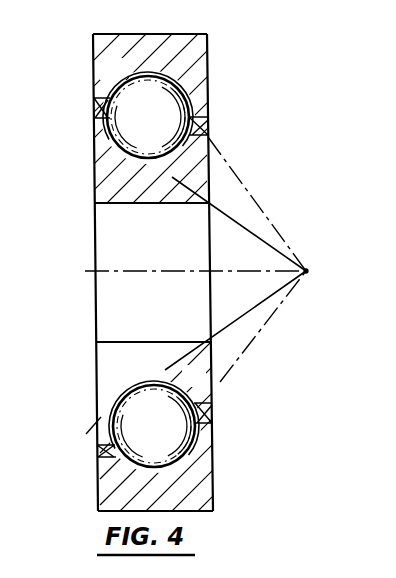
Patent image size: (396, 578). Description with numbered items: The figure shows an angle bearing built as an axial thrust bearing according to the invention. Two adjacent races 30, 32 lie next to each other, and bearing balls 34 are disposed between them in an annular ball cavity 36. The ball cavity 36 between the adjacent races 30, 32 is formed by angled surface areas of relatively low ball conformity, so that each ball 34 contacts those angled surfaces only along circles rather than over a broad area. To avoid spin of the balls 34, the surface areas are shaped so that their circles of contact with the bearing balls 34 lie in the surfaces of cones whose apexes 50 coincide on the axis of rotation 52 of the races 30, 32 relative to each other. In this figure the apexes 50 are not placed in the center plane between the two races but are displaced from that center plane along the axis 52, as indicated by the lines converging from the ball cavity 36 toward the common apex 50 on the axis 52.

The race 30 is at (95, 187).
The race 32 is at (105, 60).
The bearing ball 34 is at (136, 82).
The annular ball cavity 36 is at (93, 100).
The apex 50 is at (306, 267).
The axis of rotation 52 is at (93, 272).